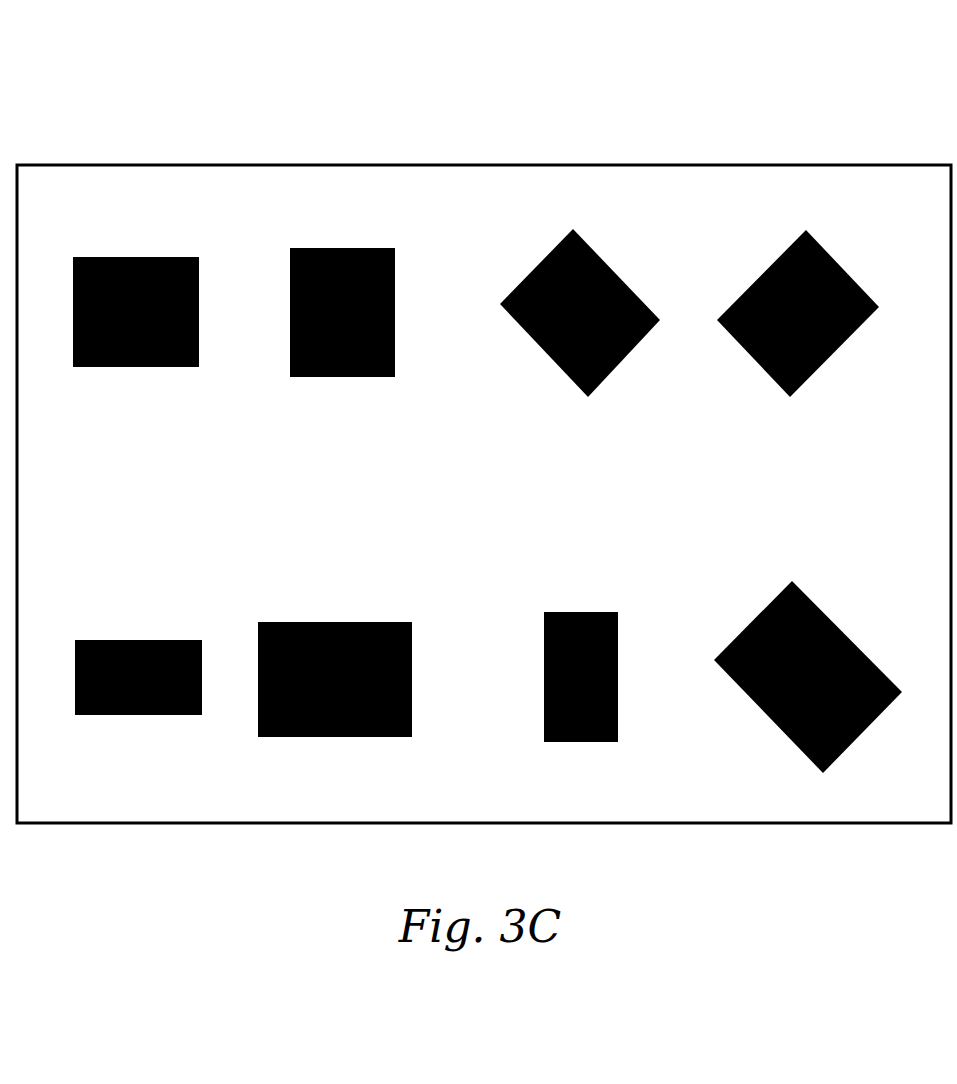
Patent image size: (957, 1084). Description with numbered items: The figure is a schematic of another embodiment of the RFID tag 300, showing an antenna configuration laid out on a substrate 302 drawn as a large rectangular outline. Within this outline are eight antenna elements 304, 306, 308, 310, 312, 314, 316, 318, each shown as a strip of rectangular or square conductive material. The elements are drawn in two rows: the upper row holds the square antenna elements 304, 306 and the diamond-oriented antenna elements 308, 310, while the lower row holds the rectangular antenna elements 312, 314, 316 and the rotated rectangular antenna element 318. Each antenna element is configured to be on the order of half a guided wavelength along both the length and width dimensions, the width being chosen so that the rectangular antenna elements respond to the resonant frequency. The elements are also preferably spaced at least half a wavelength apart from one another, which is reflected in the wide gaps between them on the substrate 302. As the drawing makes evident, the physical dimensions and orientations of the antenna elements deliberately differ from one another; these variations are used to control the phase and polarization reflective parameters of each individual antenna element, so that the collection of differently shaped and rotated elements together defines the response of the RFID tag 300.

The RFID tag 300 is at (904, 72).
The substrate 302 is at (903, 780).
The antenna element 304 is at (135, 257).
The antenna element 306 is at (336, 248).
The antenna element 308 is at (624, 280).
The antenna element 310 is at (840, 265).
The antenna element 312 is at (145, 715).
The antenna element 314 is at (338, 737).
The antenna element 316 is at (584, 742).
The antenna element 318 is at (747, 698).